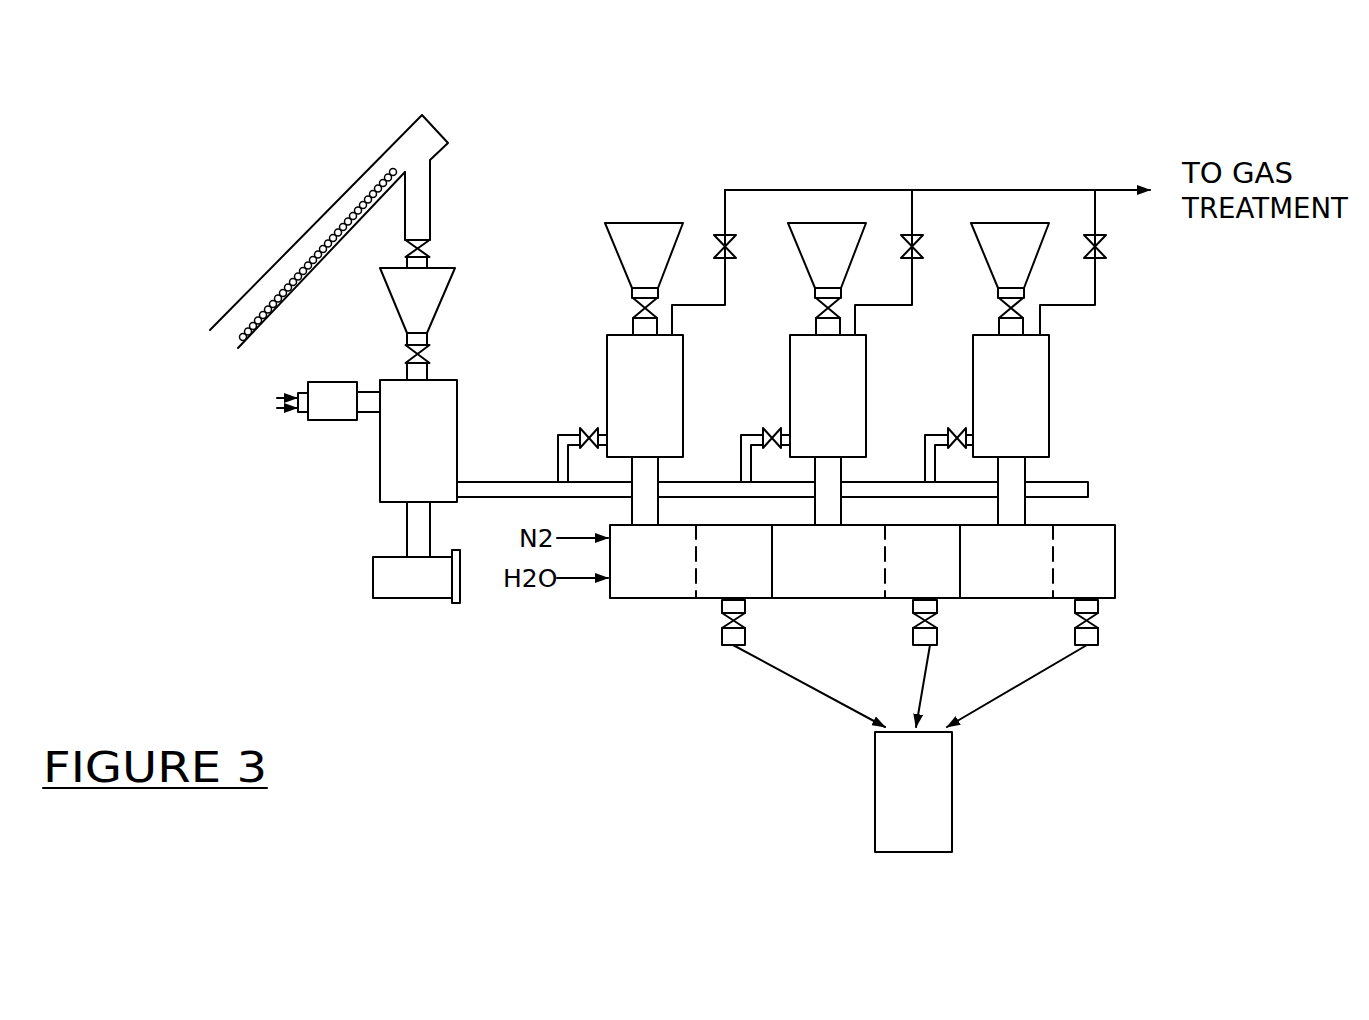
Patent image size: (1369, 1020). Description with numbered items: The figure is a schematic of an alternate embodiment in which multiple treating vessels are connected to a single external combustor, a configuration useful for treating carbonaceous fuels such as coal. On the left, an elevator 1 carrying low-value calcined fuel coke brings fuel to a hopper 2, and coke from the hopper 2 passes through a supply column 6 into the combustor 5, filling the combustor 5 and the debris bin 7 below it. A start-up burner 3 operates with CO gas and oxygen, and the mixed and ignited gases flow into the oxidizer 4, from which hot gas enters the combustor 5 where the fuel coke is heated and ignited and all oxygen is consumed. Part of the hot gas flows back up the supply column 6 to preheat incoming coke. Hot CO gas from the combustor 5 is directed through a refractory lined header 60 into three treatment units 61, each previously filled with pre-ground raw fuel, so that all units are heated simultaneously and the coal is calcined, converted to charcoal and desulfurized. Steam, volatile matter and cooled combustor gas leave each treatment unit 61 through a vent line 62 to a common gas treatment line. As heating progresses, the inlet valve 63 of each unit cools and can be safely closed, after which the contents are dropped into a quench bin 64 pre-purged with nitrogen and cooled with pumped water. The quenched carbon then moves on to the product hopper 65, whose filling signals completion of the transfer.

The elevator 1 is at (225, 303).
The hopper 2 is at (398, 300).
The start-up burner 3 is at (275, 405).
The oxidizer 4 is at (332, 413).
The combustor 5 is at (385, 465).
The supply column 6 is at (435, 372).
The debris bin 7 is at (382, 587).
The refractory lined header 60 is at (487, 482).
The treatment unit 61 is at (600, 367).
The vent line 62 is at (723, 298).
The inlet valve 63 is at (582, 428).
The quench bin 64 is at (612, 600).
The product hopper 65 is at (875, 790).